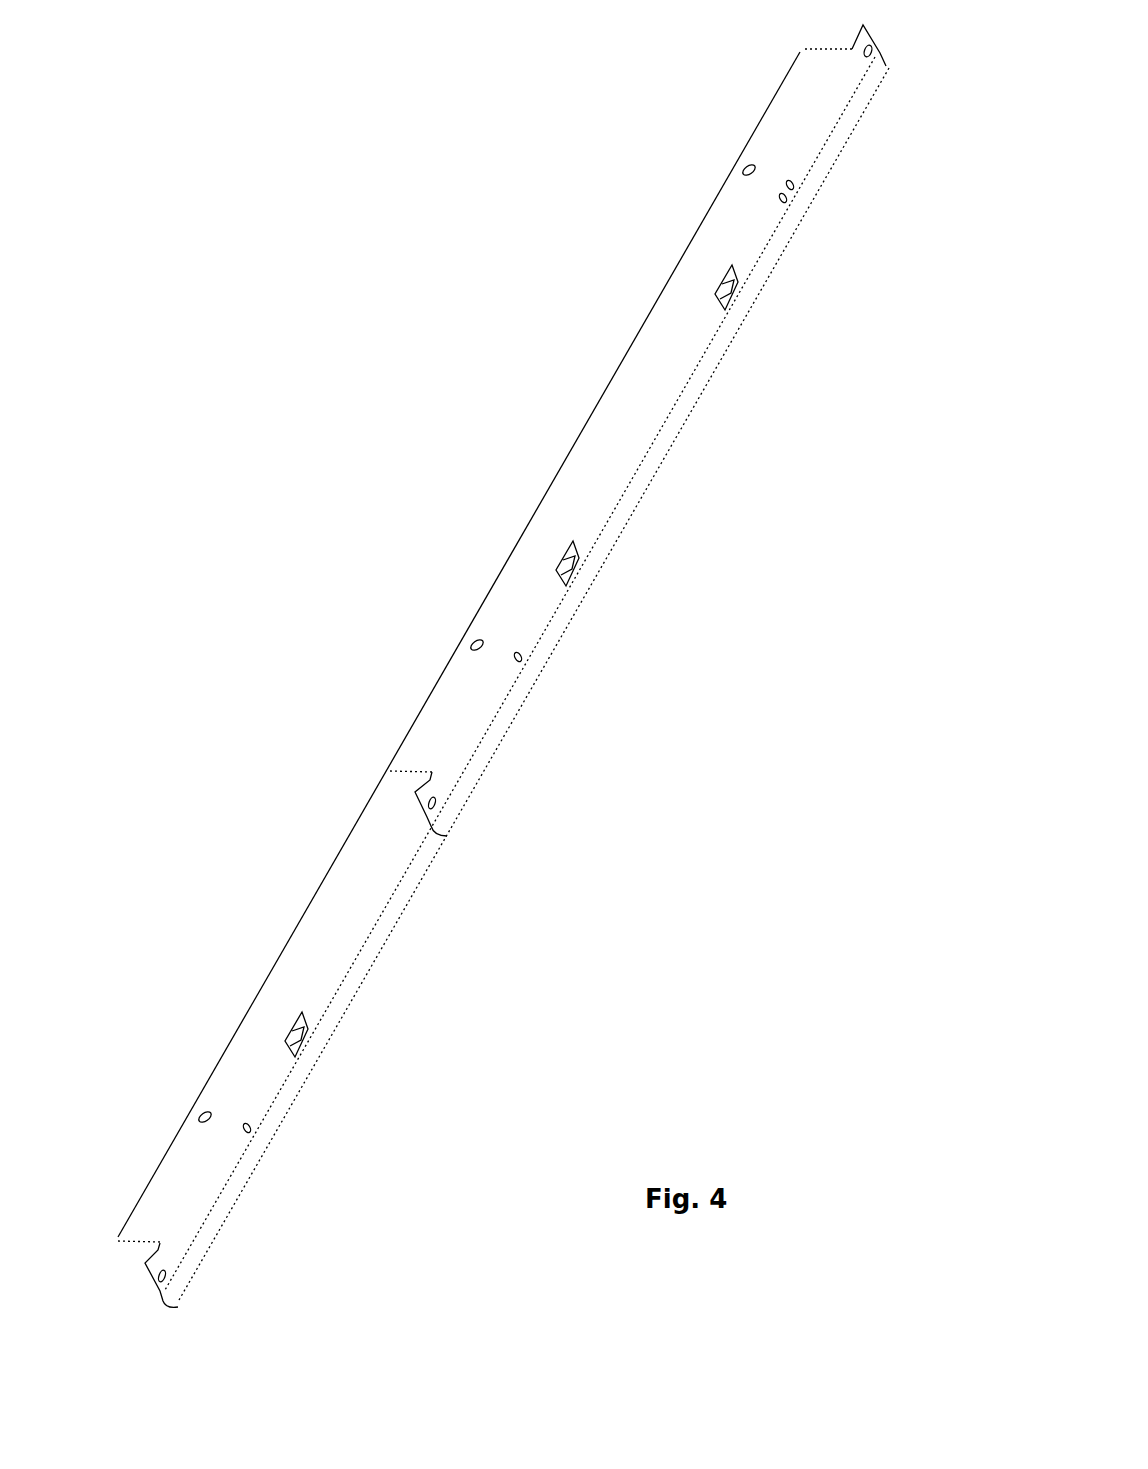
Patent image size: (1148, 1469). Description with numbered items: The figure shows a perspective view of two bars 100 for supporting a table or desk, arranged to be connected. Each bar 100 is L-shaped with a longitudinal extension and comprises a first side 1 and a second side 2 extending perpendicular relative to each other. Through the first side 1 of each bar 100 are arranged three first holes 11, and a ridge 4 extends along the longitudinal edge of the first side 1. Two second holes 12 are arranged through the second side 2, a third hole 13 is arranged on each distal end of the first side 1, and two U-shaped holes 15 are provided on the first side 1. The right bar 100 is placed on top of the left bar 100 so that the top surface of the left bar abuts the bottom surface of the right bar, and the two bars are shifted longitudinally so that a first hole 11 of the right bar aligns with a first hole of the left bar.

The bar 100 is at (441, 220).
The first side 1 is at (640, 436).
The second side 2 is at (578, 490).
The ridge 4 is at (847, 127).
The first holes 11 is at (796, 184).
The second holes 12 is at (748, 170).
The third hole 13 is at (866, 51).
The U-shaped holes 15 is at (740, 280).